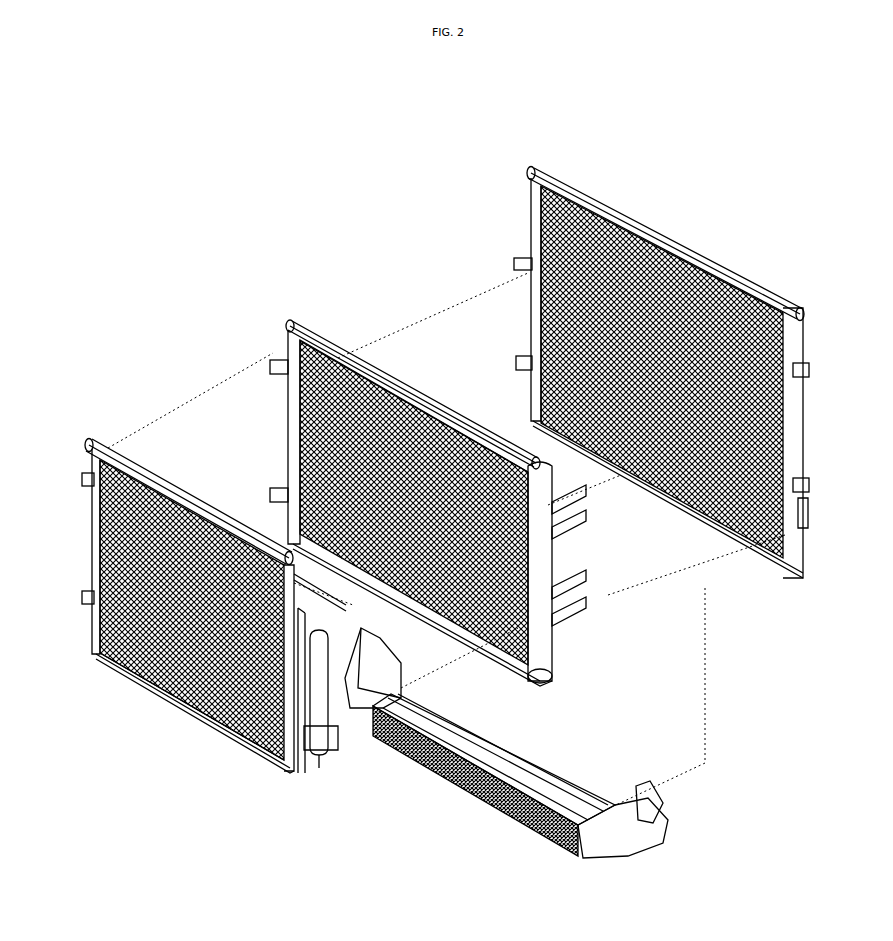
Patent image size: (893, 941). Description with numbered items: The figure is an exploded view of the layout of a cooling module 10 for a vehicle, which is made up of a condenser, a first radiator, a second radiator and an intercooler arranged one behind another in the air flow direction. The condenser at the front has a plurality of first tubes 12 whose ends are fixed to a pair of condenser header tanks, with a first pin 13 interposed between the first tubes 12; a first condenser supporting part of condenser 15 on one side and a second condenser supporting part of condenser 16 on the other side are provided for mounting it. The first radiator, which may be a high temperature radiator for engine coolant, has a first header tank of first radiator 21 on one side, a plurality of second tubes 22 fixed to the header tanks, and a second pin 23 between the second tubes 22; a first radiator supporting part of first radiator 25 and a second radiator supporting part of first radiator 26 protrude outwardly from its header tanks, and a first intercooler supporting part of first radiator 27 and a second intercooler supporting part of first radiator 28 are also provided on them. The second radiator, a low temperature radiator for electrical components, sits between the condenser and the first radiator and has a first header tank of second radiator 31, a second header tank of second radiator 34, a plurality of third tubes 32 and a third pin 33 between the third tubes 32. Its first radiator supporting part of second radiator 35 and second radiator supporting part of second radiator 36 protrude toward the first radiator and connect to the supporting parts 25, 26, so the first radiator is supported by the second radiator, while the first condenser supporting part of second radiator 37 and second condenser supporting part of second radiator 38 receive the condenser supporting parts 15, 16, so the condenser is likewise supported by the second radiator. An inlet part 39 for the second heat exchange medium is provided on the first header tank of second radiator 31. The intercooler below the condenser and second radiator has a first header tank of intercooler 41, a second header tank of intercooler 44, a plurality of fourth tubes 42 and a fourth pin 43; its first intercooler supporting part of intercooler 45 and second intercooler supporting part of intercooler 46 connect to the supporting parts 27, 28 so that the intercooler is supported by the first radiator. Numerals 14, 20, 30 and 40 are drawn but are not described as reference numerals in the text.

The cooling module 10 is at (80, 432).
The first tubes 12 is at (86, 649).
The first pin 13 is at (102, 654).
The condenser mounting pin 14 is at (89, 544).
The first condenser supporting part of condenser 15 is at (228, 735).
The second condenser supporting part of condenser 16 is at (78, 466).
The radiator 20 is at (523, 160).
The first header tank of first radiator 21 is at (795, 450).
The second tubes 22 is at (640, 217).
The second pin 23 is at (612, 210).
The first radiator supporting part of first radiator 25 is at (800, 365).
The second radiator supporting part of first radiator 26 is at (510, 257).
The first intercooler supporting part of first radiator 27 is at (800, 500).
The second intercooler supporting part of first radiator 28 is at (518, 352).
The intermediate heat exchanger 30 is at (280, 303).
The first header tank of second radiator 31 is at (545, 615).
The third tubes 32 is at (393, 352).
The third pin 33 is at (362, 348).
The second header tank of second radiator 34 is at (277, 407).
The first radiator supporting part of second radiator 35 is at (560, 497).
The second radiator supporting part of second radiator 36 is at (334, 332).
The first condenser supporting part of second radiator 37 is at (575, 585).
The second condenser supporting part of second radiator 38 is at (262, 358).
The inlet part 39 is at (562, 522).
The intercooler 40 is at (505, 830).
The first header tank of intercooler 41 is at (585, 845).
The fourth tubes 42 is at (495, 793).
The fourth pin 43 is at (472, 780).
The second header tank of intercooler 44 is at (373, 702).
The first intercooler supporting part of intercooler 45 is at (650, 835).
The second intercooler supporting part of intercooler 46 is at (312, 738).